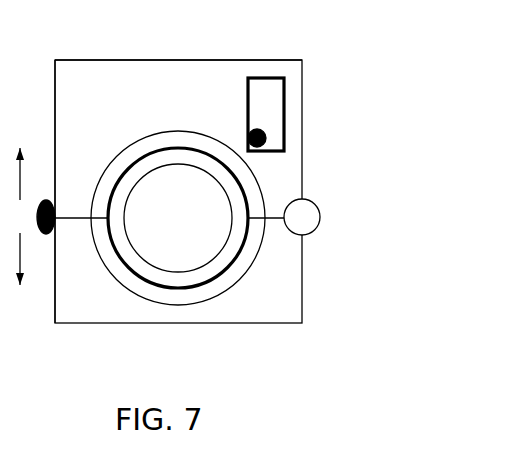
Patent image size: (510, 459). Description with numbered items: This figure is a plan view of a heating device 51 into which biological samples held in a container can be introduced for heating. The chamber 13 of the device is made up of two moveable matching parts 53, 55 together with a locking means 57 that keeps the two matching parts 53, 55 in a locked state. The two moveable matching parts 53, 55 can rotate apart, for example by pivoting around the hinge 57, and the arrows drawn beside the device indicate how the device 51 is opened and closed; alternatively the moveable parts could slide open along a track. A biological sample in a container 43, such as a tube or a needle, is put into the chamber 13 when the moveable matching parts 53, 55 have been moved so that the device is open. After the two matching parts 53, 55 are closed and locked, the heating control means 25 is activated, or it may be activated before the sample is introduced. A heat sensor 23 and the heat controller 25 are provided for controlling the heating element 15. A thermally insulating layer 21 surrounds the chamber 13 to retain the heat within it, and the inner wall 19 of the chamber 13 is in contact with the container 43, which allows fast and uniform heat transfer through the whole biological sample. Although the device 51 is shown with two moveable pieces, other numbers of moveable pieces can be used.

The chamber 13 is at (213, 218).
The heating element 15 is at (268, 188).
The inner wall 19 is at (177, 272).
The thermally insulating layer 21 is at (207, 85).
The heat sensor 23 is at (274, 134).
The heat controller 25 is at (268, 103).
The container 43 is at (202, 235).
The heating device 51 is at (338, 305).
The moveable matching part 53 is at (90, 93).
The moveable matching part 55 is at (90, 287).
The locking means 57 is at (44, 240).